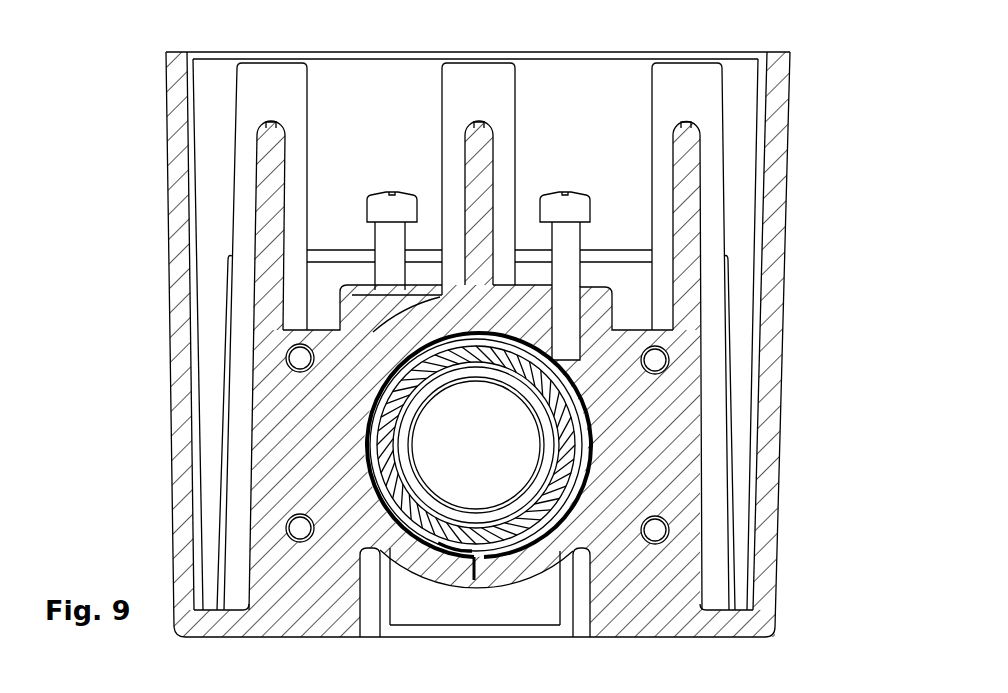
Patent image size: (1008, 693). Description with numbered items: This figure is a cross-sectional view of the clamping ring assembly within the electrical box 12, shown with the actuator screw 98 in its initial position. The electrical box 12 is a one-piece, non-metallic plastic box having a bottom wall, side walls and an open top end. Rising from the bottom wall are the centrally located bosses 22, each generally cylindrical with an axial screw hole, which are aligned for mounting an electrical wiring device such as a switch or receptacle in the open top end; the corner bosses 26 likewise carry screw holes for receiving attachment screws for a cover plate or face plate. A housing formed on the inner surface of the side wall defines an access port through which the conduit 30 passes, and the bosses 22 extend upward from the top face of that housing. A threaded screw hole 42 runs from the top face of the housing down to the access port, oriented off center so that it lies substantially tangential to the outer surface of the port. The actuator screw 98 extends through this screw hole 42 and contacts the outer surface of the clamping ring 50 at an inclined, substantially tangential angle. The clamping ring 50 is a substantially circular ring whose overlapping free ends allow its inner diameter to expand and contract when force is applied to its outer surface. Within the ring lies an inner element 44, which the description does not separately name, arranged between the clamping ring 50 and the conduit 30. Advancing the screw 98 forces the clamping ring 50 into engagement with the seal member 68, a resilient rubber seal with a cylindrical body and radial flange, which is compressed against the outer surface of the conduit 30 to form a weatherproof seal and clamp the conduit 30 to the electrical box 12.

The electrical box 12 is at (802, 196).
The centrally located boss 22 is at (515, 97).
The corner boss 26 is at (307, 144).
The screw hole 42 is at (593, 282).
The actuator screw 98 is at (368, 200).
The clamping ring 50 is at (590, 455).
The bearing 44 is at (478, 512).
The conduit 30 is at (472, 370).
The seal member 68 is at (420, 535).